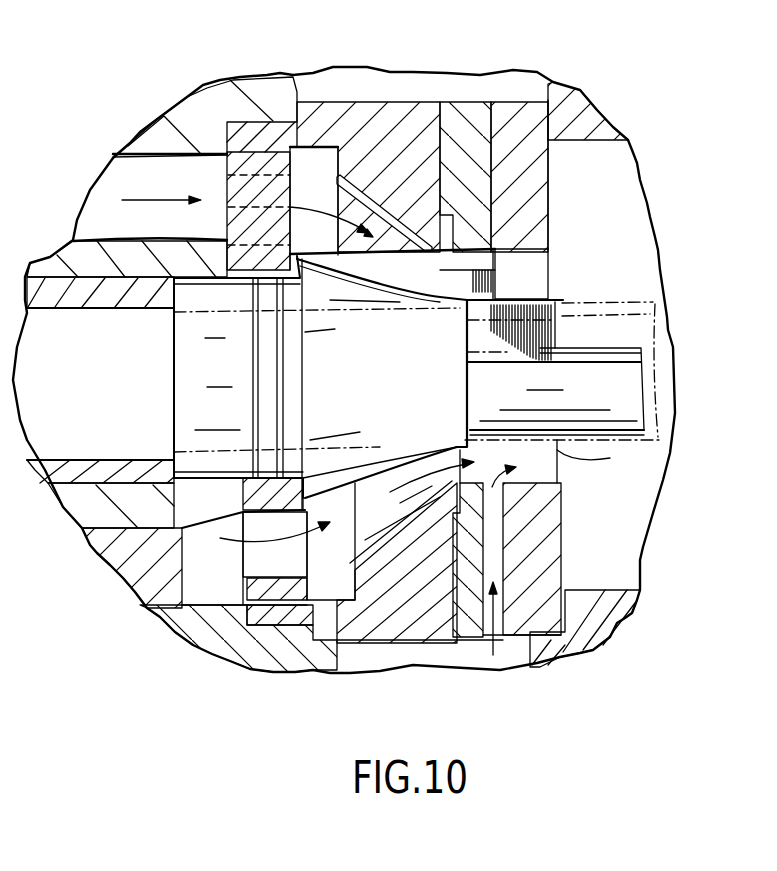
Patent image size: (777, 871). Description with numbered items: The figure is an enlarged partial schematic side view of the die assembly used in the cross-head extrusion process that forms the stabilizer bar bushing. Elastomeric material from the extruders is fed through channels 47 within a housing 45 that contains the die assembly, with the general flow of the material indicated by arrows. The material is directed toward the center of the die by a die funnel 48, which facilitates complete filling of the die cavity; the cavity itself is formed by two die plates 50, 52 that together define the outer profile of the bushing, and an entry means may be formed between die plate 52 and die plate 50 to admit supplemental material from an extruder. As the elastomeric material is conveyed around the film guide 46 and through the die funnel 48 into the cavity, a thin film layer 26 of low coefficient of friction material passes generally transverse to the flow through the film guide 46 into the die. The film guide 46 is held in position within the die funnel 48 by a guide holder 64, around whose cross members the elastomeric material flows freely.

The thin film layer 26 is at (655, 325).
The housing 45 is at (607, 618).
The film guide 46 is at (562, 300).
The channels 47 is at (112, 172).
The die funnel 48 is at (337, 665).
The die plate 50 is at (545, 93).
The die plate 52 is at (467, 107).
The guide holder 64 is at (227, 155).